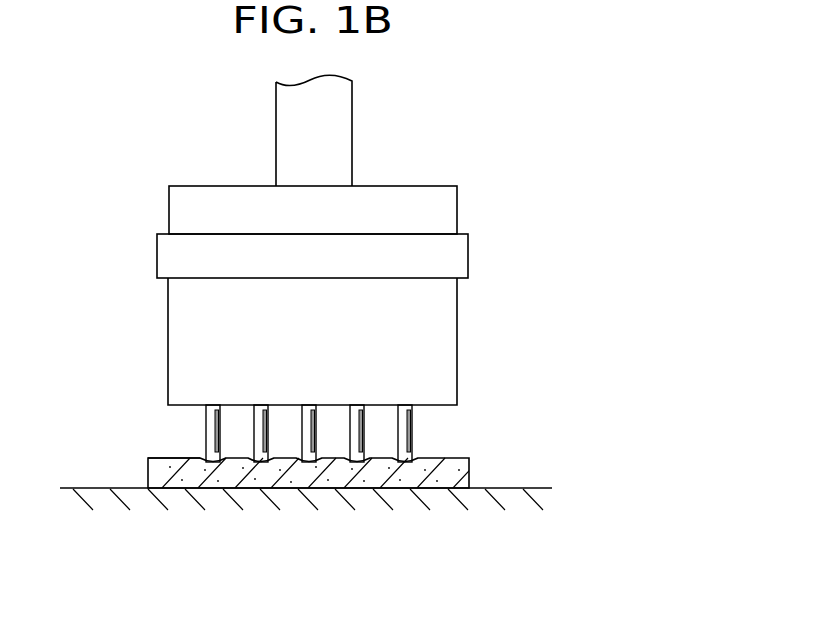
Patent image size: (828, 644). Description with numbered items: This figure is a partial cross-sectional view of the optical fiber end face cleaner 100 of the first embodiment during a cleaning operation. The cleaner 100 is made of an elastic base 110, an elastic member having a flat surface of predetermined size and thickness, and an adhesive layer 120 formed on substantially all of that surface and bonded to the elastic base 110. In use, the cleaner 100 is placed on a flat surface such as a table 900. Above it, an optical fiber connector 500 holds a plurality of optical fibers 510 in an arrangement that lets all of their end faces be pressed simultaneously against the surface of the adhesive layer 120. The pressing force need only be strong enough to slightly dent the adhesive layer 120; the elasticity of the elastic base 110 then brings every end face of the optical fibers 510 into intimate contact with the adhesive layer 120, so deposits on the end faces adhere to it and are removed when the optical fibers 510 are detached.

The optical fiber connector 500 is at (488, 162).
The optical fibers 510 is at (410, 422).
The optical fiber end face cleaner 100 is at (341, 480).
The elastic base 110 is at (255, 478).
The adhesive layer 120 is at (173, 457).
The table 900 is at (497, 498).